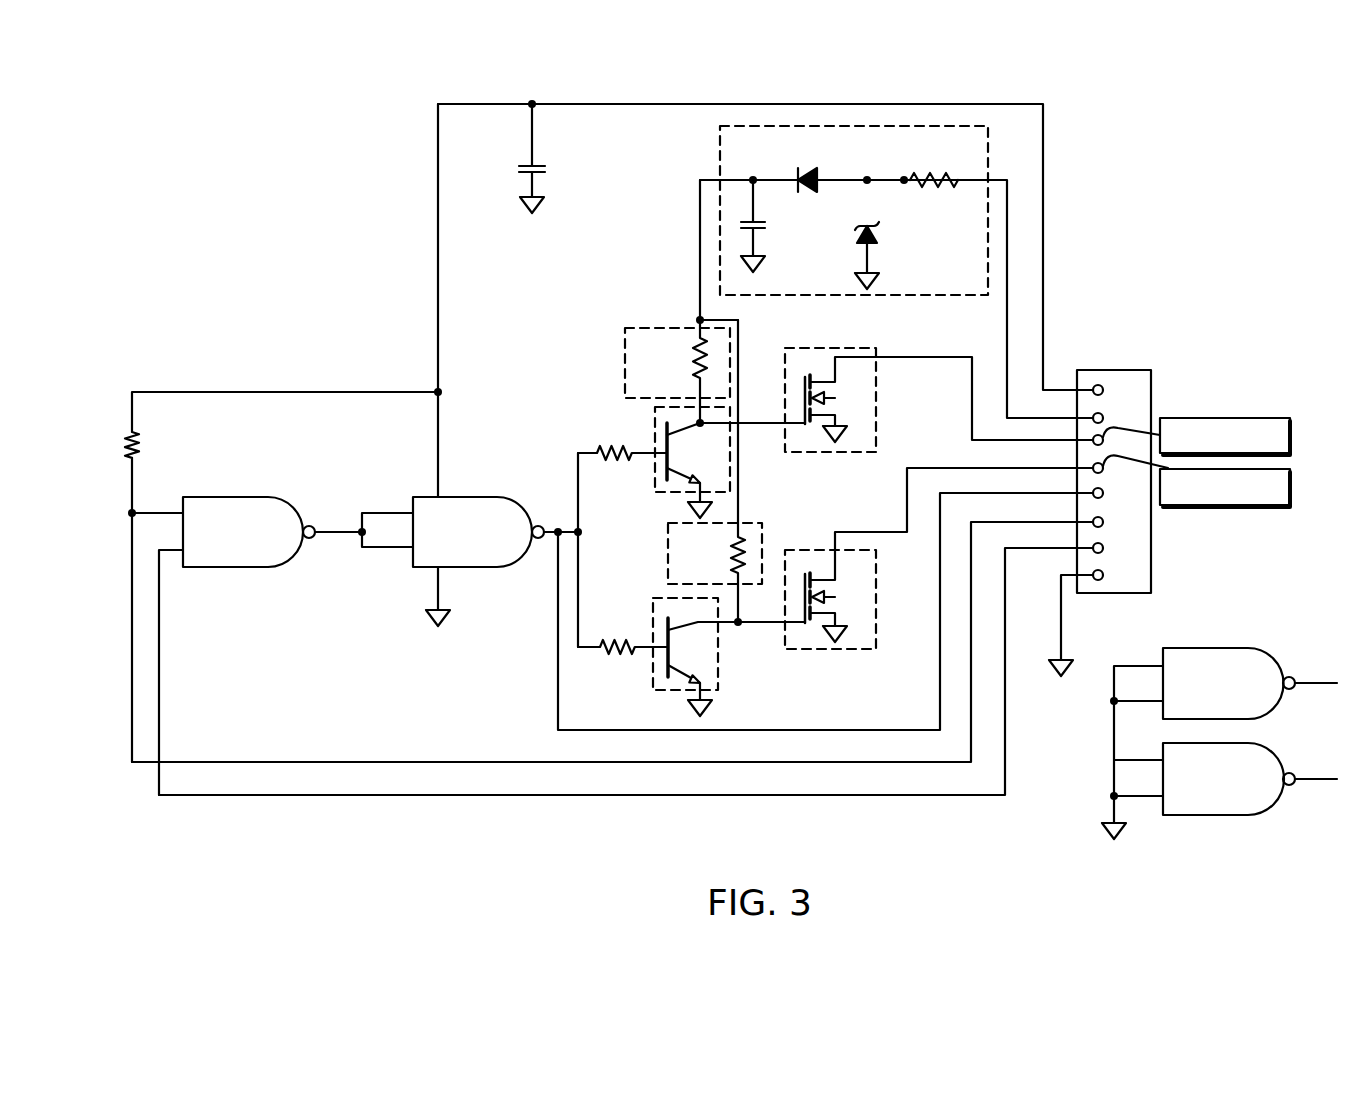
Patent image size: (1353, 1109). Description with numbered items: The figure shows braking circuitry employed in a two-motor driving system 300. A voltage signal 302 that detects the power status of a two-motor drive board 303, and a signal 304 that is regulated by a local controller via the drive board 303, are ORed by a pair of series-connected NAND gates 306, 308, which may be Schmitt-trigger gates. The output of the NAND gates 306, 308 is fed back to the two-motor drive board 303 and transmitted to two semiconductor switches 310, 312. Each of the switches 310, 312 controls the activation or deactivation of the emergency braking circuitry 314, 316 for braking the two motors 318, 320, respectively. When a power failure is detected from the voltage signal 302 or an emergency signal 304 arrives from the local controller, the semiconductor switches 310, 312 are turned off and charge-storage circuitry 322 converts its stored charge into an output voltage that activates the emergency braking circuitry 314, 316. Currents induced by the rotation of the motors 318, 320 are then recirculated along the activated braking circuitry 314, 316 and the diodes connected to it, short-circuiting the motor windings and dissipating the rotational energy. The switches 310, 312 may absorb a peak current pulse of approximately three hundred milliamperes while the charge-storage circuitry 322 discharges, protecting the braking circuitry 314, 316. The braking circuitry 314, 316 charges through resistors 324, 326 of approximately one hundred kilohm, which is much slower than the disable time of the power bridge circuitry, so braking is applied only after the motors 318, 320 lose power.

The two-motor driving system 300 is at (1240, 140).
The voltage signal 302 is at (808, 796).
The two-motor drive board 303 is at (1152, 378).
The signal 304 is at (760, 763).
The NAND gate 306 is at (232, 568).
The NAND gate 308 is at (490, 568).
The semiconductor switch 310 is at (665, 492).
The semiconductor switch 312 is at (668, 690).
The emergency braking circuitry 314 is at (821, 346).
The emergency braking circuitry 316 is at (876, 622).
The motor 318 is at (1292, 432).
The motor 320 is at (1292, 484).
The charge-storage circuitry 322 is at (720, 142).
The resistor 324 is at (665, 328).
The resistor 326 is at (667, 572).